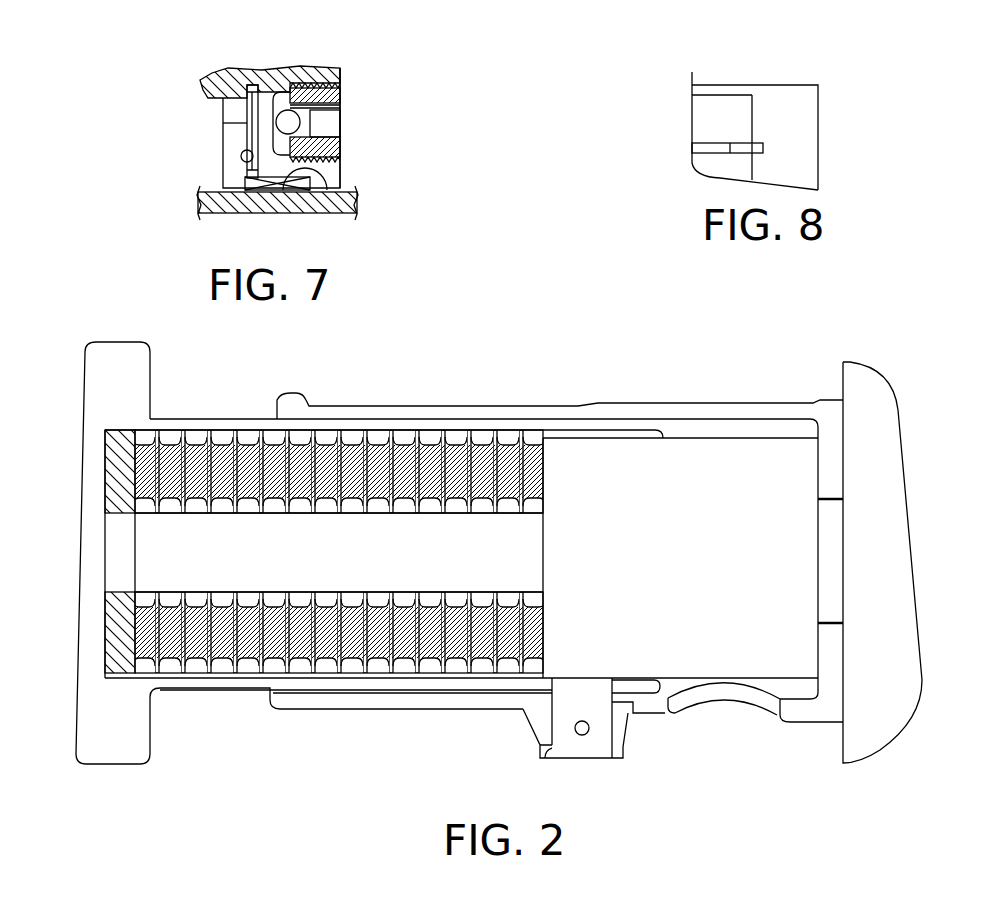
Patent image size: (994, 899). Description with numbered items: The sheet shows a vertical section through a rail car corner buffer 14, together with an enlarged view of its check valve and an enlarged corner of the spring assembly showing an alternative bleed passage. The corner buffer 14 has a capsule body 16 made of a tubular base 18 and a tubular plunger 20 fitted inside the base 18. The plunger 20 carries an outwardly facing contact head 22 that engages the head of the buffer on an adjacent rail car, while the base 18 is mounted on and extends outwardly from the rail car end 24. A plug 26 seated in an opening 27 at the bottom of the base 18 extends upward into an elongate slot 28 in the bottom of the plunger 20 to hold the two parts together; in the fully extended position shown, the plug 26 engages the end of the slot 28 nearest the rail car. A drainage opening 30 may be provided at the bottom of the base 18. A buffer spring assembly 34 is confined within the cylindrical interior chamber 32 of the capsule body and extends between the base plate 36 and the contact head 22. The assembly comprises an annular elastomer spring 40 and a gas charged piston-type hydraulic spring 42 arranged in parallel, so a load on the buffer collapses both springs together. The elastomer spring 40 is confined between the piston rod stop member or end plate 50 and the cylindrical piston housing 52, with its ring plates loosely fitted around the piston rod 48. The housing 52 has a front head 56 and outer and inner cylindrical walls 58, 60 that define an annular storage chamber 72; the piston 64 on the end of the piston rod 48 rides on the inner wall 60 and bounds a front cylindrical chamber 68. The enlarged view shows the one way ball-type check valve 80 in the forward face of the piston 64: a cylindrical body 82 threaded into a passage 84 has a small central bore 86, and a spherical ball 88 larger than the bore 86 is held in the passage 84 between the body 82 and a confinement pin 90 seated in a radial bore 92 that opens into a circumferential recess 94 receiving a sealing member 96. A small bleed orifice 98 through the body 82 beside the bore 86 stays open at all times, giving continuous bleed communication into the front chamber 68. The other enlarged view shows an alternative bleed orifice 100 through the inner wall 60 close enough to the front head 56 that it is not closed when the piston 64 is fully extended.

In FIG. 2, the corner buffer 14 is at (522, 394).
In FIG. 2, the capsule body 16 is at (218, 418).
In FIG. 2, the tubular base 18 is at (612, 403).
In FIG. 2, the tubular plunger 20 is at (247, 419).
In FIG. 2, the contact head 22 is at (106, 342).
In FIG. 2, the rail car end 24 is at (872, 400).
In FIG. 2, the plug 26 is at (573, 759).
In FIG. 2, the opening 27 is at (557, 758).
In FIG. 2, the elongate slot 28 is at (477, 686).
In FIG. 2, the drainage opening 30 is at (688, 704).
In FIG. 2, the cylindrical interior chamber 32 is at (243, 676).
In FIG. 2, the buffer spring assembly 34 is at (738, 440).
In FIG. 2, the base plate 36 is at (830, 643).
In FIG. 2, the annular elastomer spring 40 is at (327, 448).
In FIG. 2, the gas charged piston-type hydraulic spring 42 is at (722, 663).
In FIG. 7, the piston rod 48 is at (205, 90).
In FIG. 2, the piston rod 48 is at (311, 561).
In FIG. 2, the piston rod stop member or end plate 50 is at (113, 507).
In FIG. 2, the cylindrical piston housing 52 is at (626, 558).
In FIG. 8, the front head 56 is at (818, 108).
In FIG. 8, the outer cylindrical wall 58 is at (692, 91).
In FIG. 7, the inner cylindrical wall 60 is at (297, 212).
In FIG. 8, the inner cylindrical wall 60 is at (692, 148).
In FIG. 7, the piston 64 is at (283, 88).
In FIG. 8, the front cylindrical chamber 68 is at (718, 173).
In FIG. 8, the annular storage chamber 72 is at (703, 115).
In FIG. 7, the one way ball-type check valve 80 is at (342, 84).
In FIG. 7, the cylindrical body 82 is at (342, 148).
In FIG. 7, the passage 84 is at (238, 145).
In FIG. 7, the central bore 86 is at (312, 127).
In FIG. 7, the spherical ball 88 is at (288, 108).
In FIG. 7, the confinement pin 90 is at (247, 117).
In FIG. 7, the radial bore 92 is at (244, 160).
In FIG. 7, the circumferential recess 94 is at (327, 195).
In FIG. 7, the sealing member 96 is at (224, 216).
In FIG. 7, the bleed orifice 98 is at (342, 107).
In FIG. 8, the bleed orifice 100 is at (730, 147).